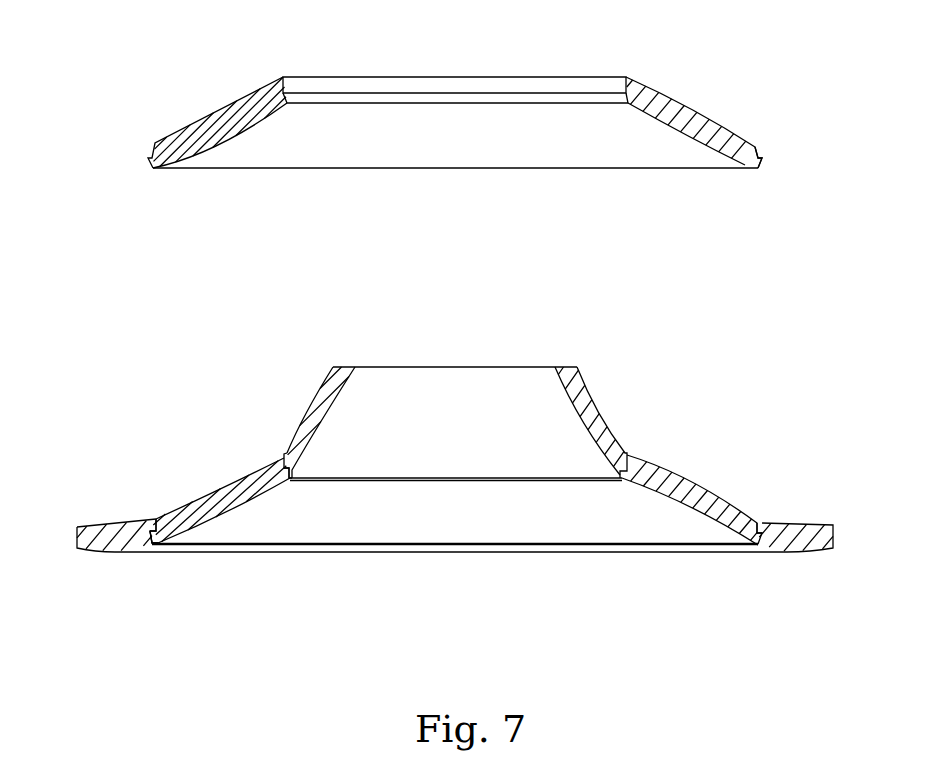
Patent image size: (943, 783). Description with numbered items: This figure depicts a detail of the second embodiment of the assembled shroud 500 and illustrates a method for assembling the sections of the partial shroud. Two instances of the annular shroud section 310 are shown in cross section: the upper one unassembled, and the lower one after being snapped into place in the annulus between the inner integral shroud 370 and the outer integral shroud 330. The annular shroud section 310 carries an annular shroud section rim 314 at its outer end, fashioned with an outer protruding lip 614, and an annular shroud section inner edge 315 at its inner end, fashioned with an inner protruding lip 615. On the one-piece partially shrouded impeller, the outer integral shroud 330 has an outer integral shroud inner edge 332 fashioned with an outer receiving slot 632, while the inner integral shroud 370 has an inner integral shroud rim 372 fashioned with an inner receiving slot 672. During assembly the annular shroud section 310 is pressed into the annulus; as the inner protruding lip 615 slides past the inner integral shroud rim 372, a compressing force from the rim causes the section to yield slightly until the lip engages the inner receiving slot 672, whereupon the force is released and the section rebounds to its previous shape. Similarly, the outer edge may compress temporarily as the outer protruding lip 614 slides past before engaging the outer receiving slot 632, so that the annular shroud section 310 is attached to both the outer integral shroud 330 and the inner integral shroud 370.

The annular shroud section 310 is at (200, 91).
The annular shroud section inner edge 315 is at (435, 85).
The inner protruding lip 615 is at (453, 98).
The annular shroud section rim 314 is at (757, 148).
The assembled shroud 500 is at (122, 312).
The outer integral shroud 330 is at (793, 533).
The inner integral shroud 370 is at (447, 373).
The inner integral shroud rim 372 is at (287, 453).
The inner receiving slot 672 is at (290, 468).
The outer integral shroud inner edge 332 is at (157, 520).
The outer receiving slot 632 is at (150, 540).
The outer protruding lip 614 is at (158, 543).